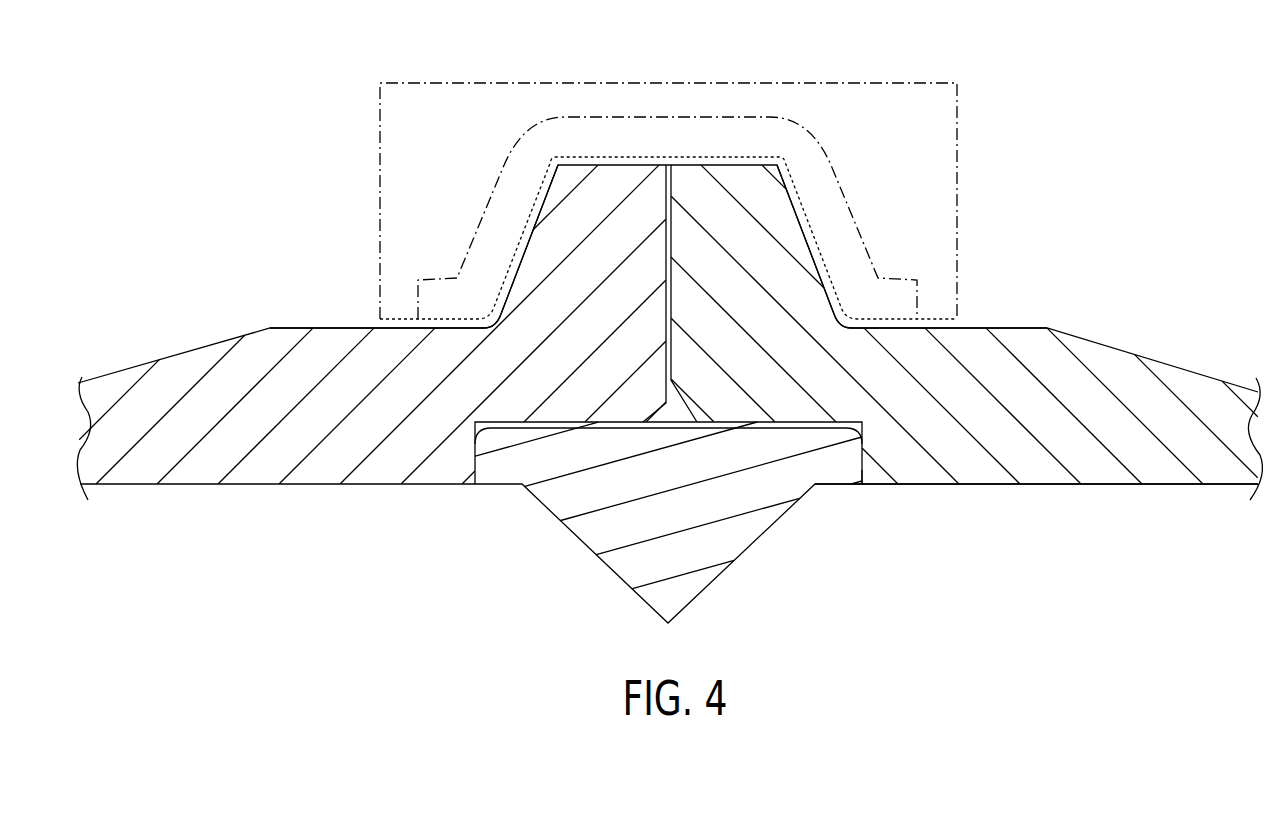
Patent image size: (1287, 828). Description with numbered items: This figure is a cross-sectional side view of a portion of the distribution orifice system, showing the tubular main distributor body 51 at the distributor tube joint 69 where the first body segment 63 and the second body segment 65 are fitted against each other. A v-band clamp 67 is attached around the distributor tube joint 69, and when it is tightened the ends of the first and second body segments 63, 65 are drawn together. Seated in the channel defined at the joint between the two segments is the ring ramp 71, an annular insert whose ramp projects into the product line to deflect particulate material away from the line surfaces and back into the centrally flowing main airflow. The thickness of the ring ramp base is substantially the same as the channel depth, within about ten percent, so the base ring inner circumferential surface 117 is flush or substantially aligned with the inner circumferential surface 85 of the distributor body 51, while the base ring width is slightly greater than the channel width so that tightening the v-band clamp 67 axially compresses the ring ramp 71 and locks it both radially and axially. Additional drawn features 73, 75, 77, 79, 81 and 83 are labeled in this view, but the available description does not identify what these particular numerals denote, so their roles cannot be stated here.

The distributor body 51 is at (197, 185).
The first body segment 63 is at (197, 467).
The second body segment 65 is at (1155, 468).
The v-band clamp 67 is at (497, 108).
The distributor tube joint 69 is at (995, 215).
The ring ramp 71 is at (532, 575).
The first sidewall 73 is at (548, 243).
The second sidewall 75 is at (790, 215).
The first flange surface 77 is at (298, 365).
The second flange surface 79 is at (1060, 365).
The outer boundary line 81 is at (740, 128).
The treatment zone 83 is at (668, 84).
The inner circumferential surface 85 is at (988, 484).
The base ring inner circumferential surface 117 is at (848, 488).